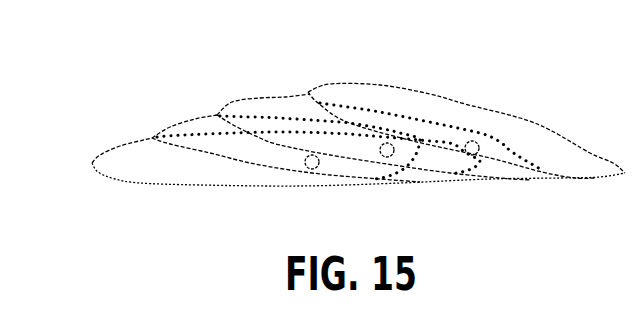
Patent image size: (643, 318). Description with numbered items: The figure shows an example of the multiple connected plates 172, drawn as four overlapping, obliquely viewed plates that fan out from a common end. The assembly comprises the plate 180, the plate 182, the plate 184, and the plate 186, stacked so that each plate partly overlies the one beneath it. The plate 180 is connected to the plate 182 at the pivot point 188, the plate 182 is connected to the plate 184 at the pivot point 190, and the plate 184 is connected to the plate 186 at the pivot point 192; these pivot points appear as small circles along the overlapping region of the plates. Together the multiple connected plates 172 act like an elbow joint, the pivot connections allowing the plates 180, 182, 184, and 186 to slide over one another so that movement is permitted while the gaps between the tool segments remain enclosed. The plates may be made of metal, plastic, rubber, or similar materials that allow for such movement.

The multiple connected plates 172 is at (201, 52).
The plate 180 is at (123, 143).
The plate 182 is at (190, 115).
The plate 184 is at (280, 98).
The plate 186 is at (358, 80).
The pivot point 188 is at (312, 170).
The pivot point 190 is at (387, 158).
The pivot point 192 is at (472, 156).